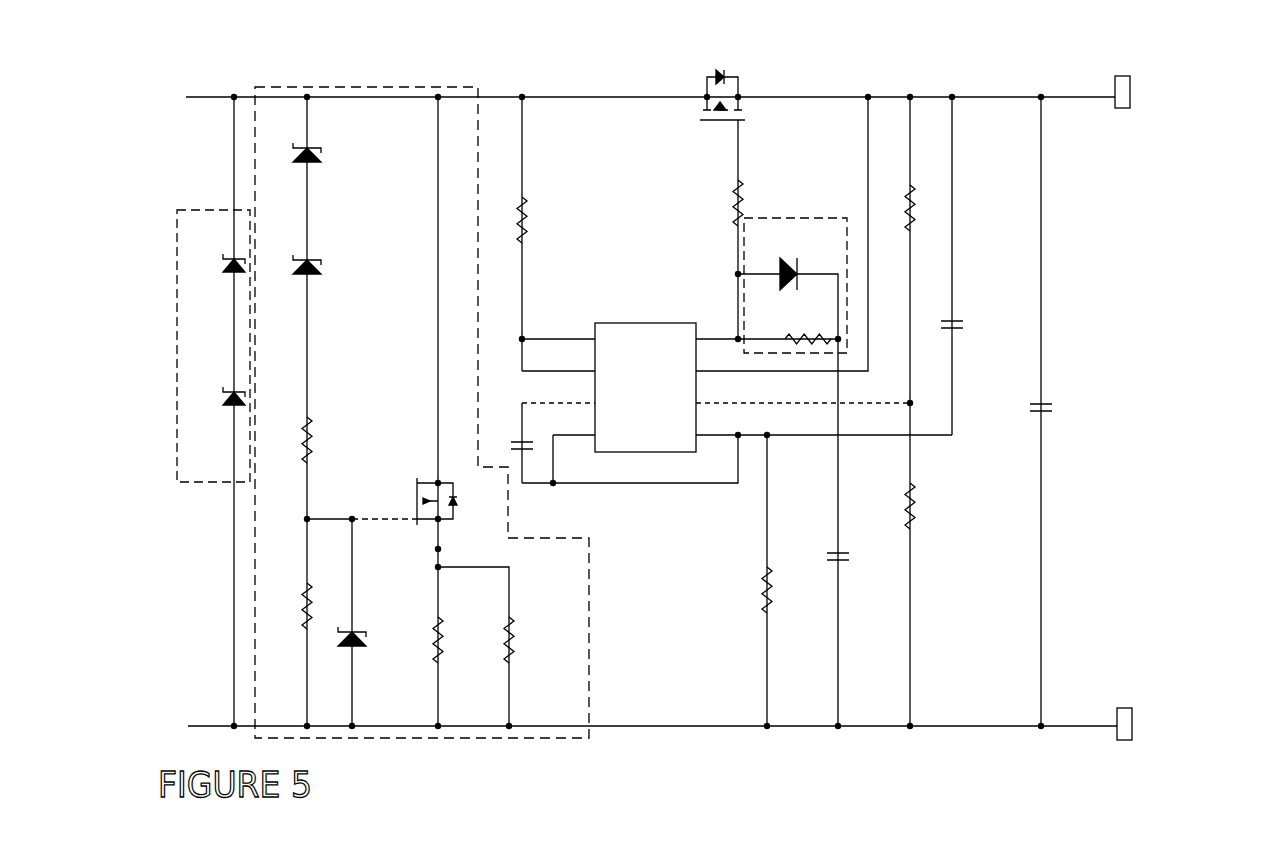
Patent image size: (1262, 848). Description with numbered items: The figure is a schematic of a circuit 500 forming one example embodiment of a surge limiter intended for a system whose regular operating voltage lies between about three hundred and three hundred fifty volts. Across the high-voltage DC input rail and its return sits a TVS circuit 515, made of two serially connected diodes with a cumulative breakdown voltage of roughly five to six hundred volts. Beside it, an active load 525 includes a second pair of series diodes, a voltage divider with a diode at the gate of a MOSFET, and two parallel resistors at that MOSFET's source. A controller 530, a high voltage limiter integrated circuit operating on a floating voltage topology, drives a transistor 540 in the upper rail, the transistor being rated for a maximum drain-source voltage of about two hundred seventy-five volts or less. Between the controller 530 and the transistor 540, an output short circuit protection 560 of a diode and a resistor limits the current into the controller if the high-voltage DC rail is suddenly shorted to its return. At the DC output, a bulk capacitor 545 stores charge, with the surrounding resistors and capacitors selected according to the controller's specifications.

The circuit 500 is at (689, 403).
The TVS circuit 515 is at (194, 210).
The active load 525 is at (479, 87).
The controller 530 is at (735, 291).
The transistor 540 is at (705, 76).
The bulk capacitor 545 is at (1060, 404).
The output short circuit protection 560 is at (808, 218).